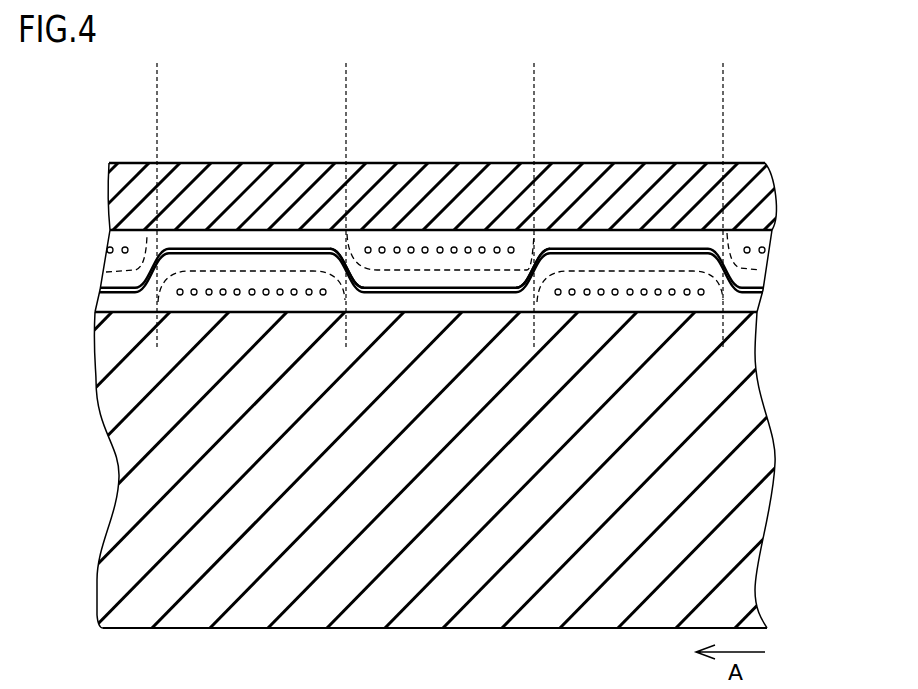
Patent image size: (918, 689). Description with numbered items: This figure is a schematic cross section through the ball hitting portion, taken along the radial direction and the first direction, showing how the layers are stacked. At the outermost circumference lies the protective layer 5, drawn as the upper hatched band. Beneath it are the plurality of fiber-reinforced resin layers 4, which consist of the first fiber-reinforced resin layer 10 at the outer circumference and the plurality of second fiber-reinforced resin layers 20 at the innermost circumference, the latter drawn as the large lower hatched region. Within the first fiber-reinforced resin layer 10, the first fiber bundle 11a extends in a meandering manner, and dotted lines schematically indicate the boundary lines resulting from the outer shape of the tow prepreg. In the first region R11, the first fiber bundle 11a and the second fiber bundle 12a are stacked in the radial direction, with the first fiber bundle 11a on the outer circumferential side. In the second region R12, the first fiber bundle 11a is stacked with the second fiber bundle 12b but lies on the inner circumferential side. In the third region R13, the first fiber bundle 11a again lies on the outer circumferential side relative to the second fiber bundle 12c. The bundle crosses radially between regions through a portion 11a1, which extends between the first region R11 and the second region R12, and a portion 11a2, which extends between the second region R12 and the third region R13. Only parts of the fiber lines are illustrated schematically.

The fiber-reinforced resin layers 4 is at (459, 373).
The protective layer 5 is at (763, 196).
The first fiber-reinforced resin layer 10 is at (466, 215).
The second fiber-reinforced resin layers 20 is at (757, 457).
The first fiber bundle 11a is at (308, 240).
The portion of first fiber bundle 11a1 is at (563, 253).
The portion of first fiber bundle 11a2 is at (370, 268).
The second fiber bundle 12a is at (658, 278).
The second fiber bundle 12b is at (465, 238).
The second fiber bundle 12c is at (247, 277).
The first region R11 is at (721, 83).
The second region R12 is at (531, 83).
The third region R13 is at (343, 83).